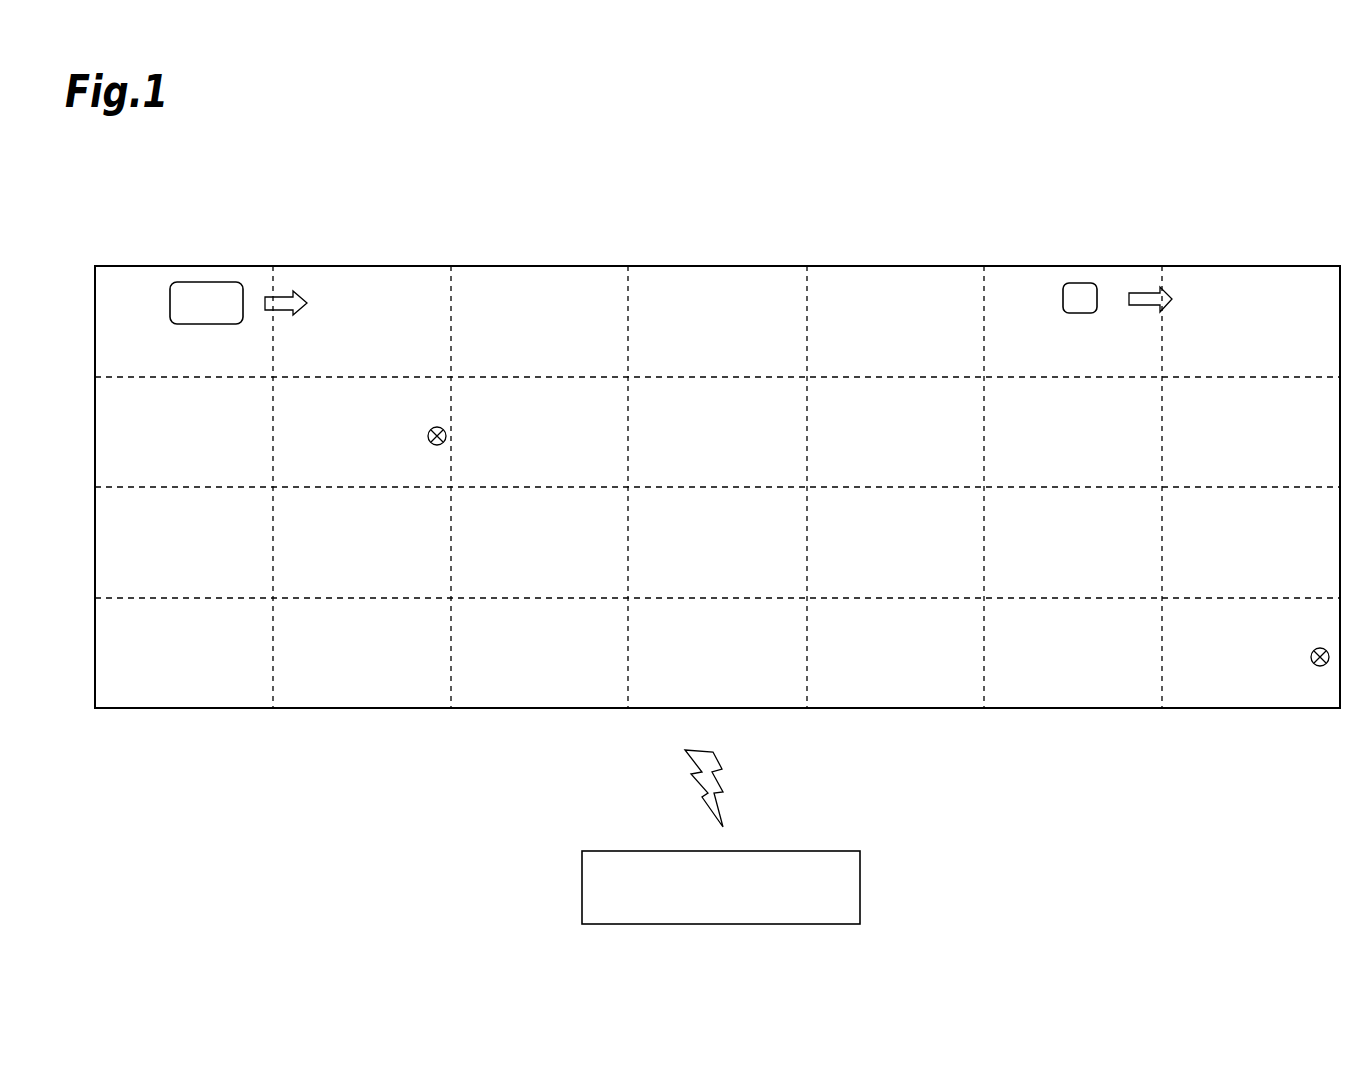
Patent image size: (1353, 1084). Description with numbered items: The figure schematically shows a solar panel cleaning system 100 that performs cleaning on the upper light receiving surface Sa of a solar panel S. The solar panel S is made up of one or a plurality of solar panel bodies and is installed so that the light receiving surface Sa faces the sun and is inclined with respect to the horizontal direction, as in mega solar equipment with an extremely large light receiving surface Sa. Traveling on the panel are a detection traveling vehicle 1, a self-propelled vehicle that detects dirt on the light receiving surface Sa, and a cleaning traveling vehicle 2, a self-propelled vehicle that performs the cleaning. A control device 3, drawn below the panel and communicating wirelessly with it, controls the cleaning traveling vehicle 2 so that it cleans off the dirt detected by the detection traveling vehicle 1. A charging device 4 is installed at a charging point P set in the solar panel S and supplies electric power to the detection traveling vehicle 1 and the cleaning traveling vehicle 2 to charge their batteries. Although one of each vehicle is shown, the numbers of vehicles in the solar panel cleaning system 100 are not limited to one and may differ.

The detection traveling vehicle 1 is at (1083, 281).
The cleaning traveling vehicle 2 is at (218, 281).
The control device 3 is at (862, 871).
The charging device 4 is at (437, 426).
The solar panel cleaning system 100 is at (338, 797).
The solar panel S is at (900, 262).
The light receiving surface Sa is at (683, 283).